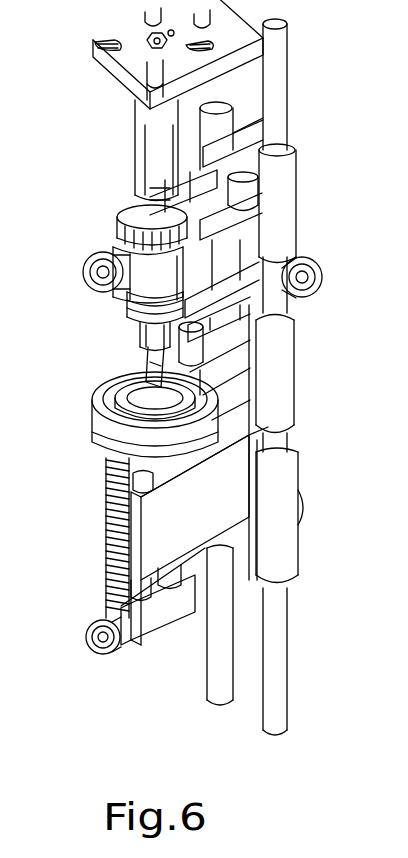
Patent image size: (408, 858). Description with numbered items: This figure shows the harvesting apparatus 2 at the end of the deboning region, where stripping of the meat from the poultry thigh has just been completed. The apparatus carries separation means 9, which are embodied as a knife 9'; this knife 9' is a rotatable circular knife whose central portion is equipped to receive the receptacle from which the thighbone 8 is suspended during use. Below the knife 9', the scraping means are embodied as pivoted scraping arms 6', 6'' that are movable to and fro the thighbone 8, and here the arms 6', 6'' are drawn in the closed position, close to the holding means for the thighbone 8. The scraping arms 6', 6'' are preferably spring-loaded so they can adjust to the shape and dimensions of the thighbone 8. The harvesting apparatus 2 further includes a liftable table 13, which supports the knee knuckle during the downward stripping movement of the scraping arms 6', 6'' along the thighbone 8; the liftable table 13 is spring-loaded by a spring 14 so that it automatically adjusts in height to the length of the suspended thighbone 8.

The harvesting apparatus 2 is at (89, 318).
The separation means 9 is at (95, 336).
The knife 9' is at (92, 367).
The scraping arm 6' is at (107, 400).
The scraping arm 6'' is at (119, 406).
The liftable table 13 is at (100, 453).
The spring 14 is at (104, 570).
The thighbone 8 is at (215, 407).